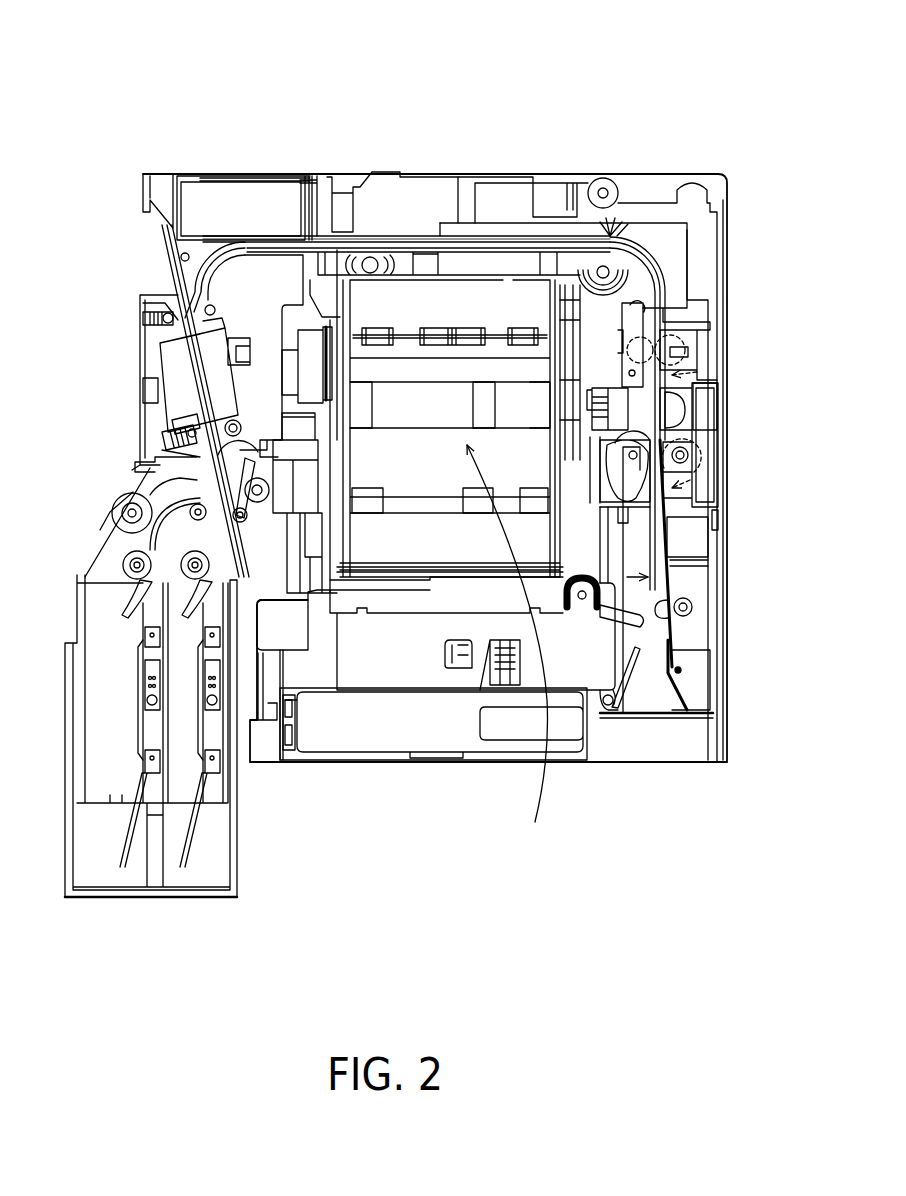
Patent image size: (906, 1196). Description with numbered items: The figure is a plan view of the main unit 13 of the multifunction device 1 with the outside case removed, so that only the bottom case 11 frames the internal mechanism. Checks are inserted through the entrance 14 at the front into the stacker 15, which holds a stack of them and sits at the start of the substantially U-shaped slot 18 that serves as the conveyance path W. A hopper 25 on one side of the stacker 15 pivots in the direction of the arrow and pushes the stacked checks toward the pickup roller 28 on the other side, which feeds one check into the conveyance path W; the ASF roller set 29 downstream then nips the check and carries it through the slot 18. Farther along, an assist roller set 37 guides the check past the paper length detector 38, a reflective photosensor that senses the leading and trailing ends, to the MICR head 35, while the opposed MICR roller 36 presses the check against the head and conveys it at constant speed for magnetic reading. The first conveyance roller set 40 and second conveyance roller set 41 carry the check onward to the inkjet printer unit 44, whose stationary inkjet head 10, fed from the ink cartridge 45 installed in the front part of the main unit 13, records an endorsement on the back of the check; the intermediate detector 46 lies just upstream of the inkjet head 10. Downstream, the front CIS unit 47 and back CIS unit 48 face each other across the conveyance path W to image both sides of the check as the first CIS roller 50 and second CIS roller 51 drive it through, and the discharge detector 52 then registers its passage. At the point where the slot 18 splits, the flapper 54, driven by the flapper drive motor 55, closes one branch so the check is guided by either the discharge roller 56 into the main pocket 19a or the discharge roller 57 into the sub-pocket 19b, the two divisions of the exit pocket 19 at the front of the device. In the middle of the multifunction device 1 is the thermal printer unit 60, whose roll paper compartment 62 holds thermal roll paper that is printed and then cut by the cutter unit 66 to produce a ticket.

The multifunction device 1 is at (429, 96).
The inkjet head 10 is at (278, 250).
The bottom case 11 is at (676, 740).
The main unit 13 is at (617, 227).
The entrance 14 is at (645, 686).
The stacker 15 is at (652, 642).
The slot 18 is at (492, 240).
The exit pocket 19 is at (196, 978).
The main pocket 19a is at (107, 777).
The sub-pocket 19b is at (182, 780).
The hopper 25 is at (613, 553).
The pickup roller 28 is at (655, 594).
The ASF roller set 29 is at (673, 488).
The MICR head 35 is at (663, 308).
The MICR roller 36 is at (650, 263).
The assist roller set 37 is at (697, 372).
The paper length detector 38 is at (642, 317).
The first conveyance roller set 40 is at (620, 236).
The second conveyance roller set 41 is at (370, 230).
The inkjet printer unit 44 is at (257, 245).
The ink cartridge 45 is at (437, 762).
The intermediate detector 46 is at (318, 238).
The front CIS unit 47 is at (170, 367).
The back CIS unit 48 is at (190, 375).
The first CIS roller 50 is at (170, 303).
The second CIS roller 51 is at (187, 428).
The discharge detector 52 is at (157, 445).
The flapper 54 is at (187, 488).
The flapper drive motor 55 is at (107, 505).
The discharge roller 56 is at (133, 560).
The discharge roller 57 is at (187, 540).
The thermal printer unit 60 is at (430, 545).
The roll paper compartment 62 is at (508, 647).
The cutter unit 66 is at (365, 660).
The conveyance path W is at (447, 240).